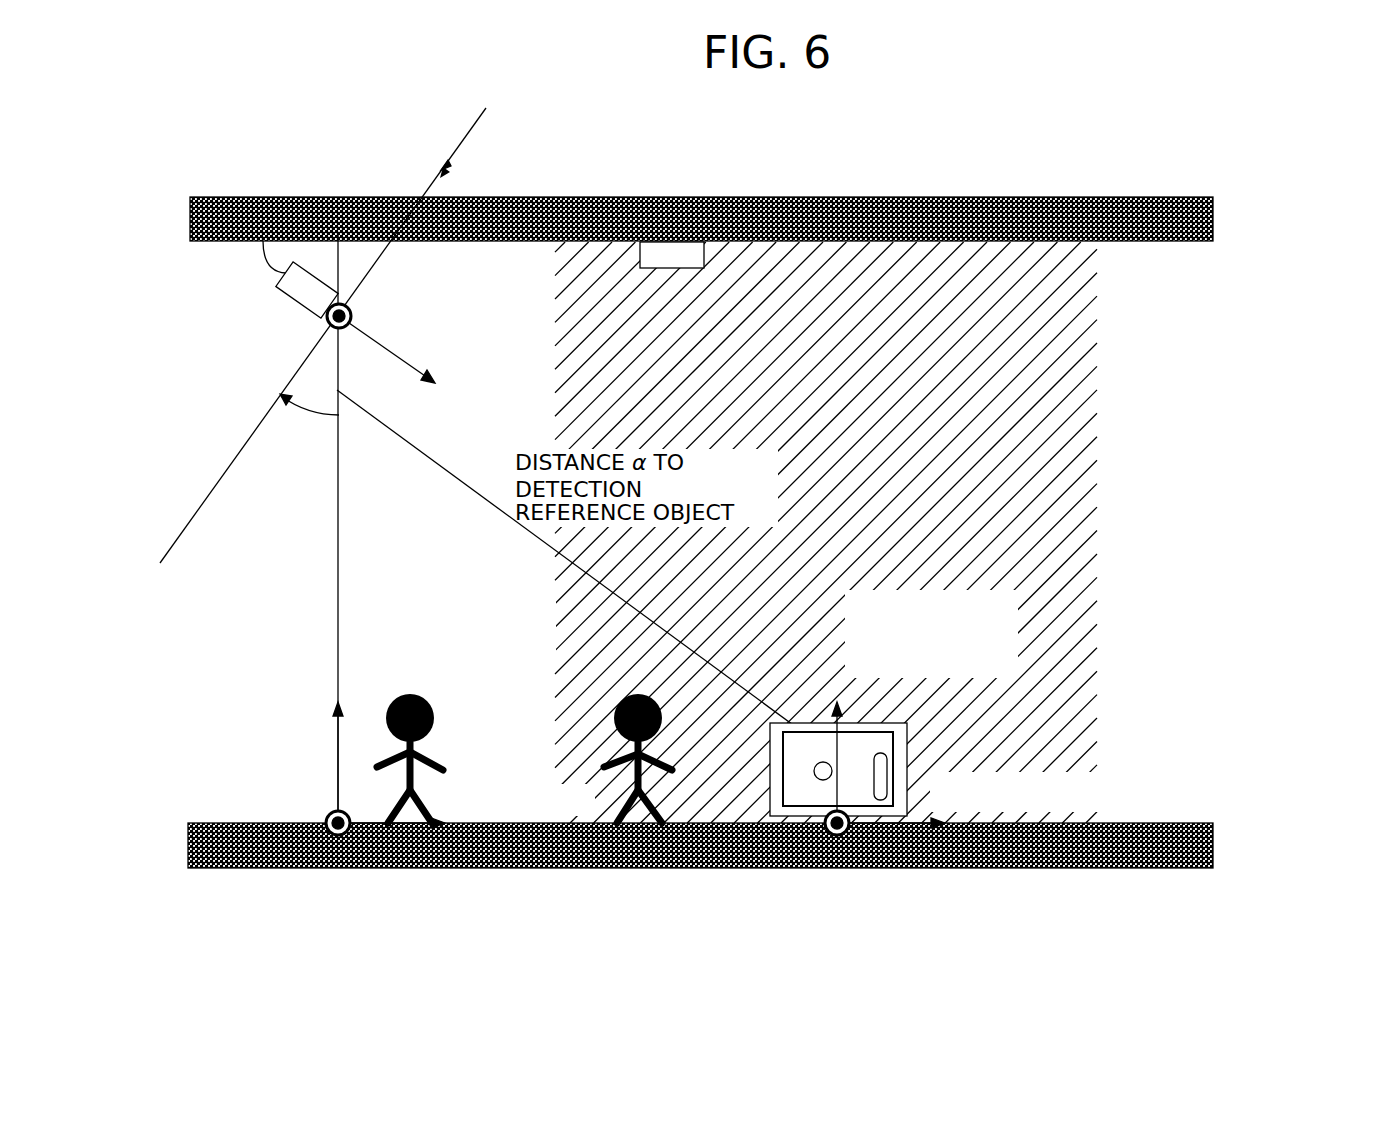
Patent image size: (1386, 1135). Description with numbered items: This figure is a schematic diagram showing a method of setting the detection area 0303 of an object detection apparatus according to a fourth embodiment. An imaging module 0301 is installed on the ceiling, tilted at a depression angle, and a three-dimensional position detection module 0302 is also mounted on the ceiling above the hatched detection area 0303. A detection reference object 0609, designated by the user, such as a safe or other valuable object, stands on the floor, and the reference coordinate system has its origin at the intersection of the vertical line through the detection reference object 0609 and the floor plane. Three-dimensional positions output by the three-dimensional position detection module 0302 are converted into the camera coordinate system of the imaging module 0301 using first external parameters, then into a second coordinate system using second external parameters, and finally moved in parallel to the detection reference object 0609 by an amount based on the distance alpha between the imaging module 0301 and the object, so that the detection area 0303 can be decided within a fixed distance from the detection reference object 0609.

The imaging module 0301 is at (282, 295).
The three-dimensional position detection module 0302 is at (673, 240).
The detection area 0303 is at (1073, 358).
The detection reference object 0609 is at (888, 723).